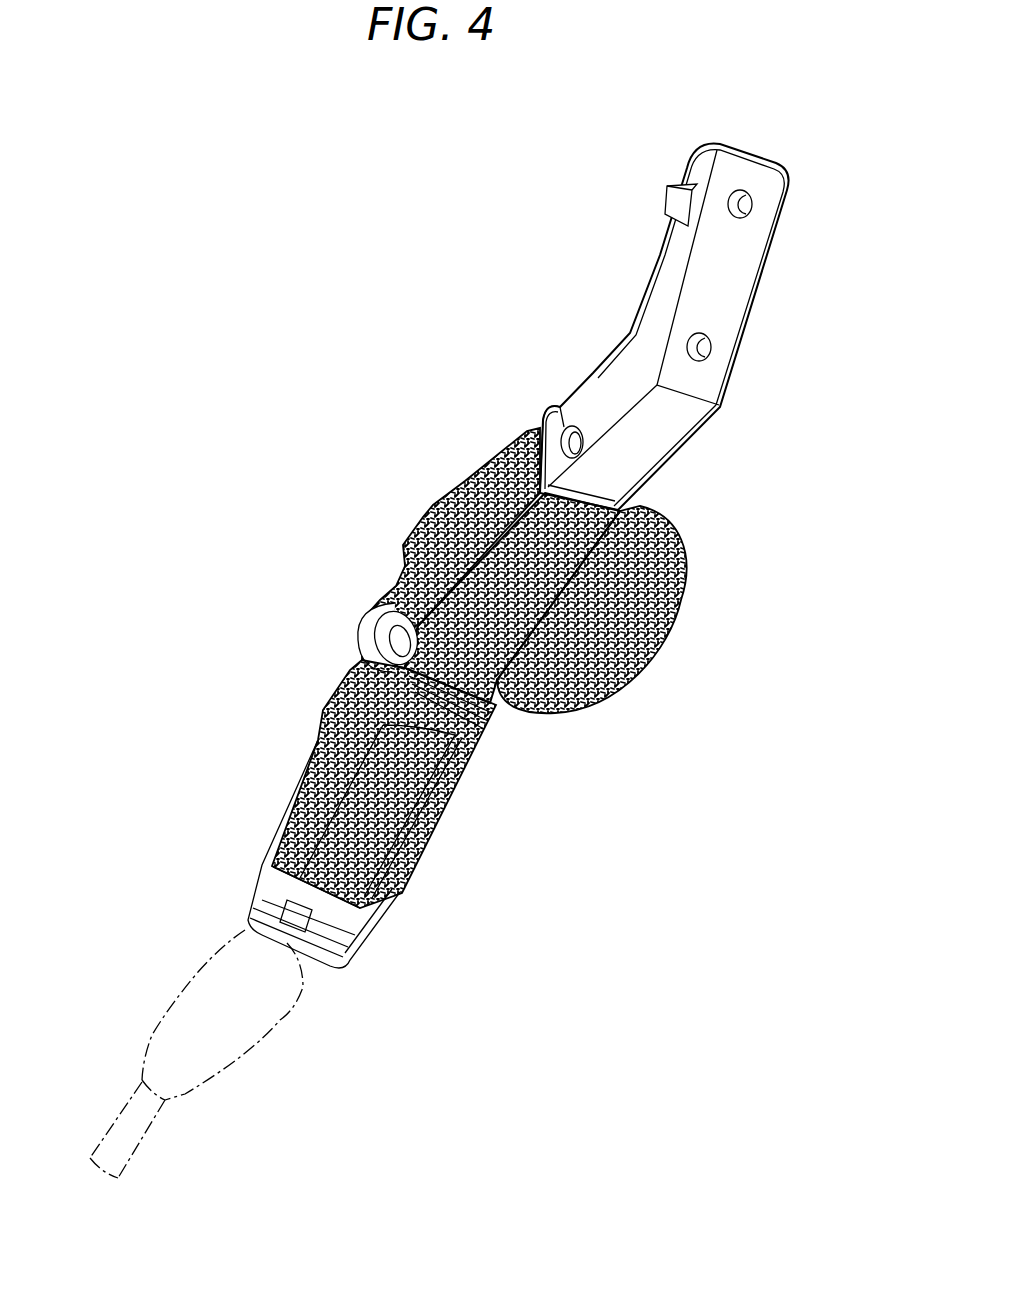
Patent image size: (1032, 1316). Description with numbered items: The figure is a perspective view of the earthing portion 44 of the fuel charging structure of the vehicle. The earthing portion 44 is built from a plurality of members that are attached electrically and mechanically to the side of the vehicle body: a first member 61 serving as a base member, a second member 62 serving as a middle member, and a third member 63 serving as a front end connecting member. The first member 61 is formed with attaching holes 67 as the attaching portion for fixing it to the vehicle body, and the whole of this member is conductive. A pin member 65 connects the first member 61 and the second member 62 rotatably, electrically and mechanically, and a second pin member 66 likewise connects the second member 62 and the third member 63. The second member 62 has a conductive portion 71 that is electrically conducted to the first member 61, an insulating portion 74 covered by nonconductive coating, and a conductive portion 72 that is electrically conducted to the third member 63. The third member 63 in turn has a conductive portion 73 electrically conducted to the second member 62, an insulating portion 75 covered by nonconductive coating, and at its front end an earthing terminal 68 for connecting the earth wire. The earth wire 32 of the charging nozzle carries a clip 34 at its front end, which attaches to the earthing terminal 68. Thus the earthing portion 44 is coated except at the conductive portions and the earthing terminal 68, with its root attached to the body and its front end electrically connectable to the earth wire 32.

The earthing portion 44 is at (268, 181).
The first member 61 is at (605, 292).
The second member 62 is at (410, 487).
The third member 63 is at (283, 745).
The pin member 65 is at (583, 443).
The pin member 66 is at (520, 713).
The attaching holes 67 is at (736, 206).
The earthing terminal 68 is at (358, 948).
The conductive portion 71 is at (553, 410).
The conductive portion 72 is at (368, 600).
The conductive portion 73 is at (357, 625).
The insulating portion 74 is at (640, 627).
The insulating portion 75 is at (455, 825).
The clip 34 is at (193, 977).
The earth wire 32 is at (157, 1140).